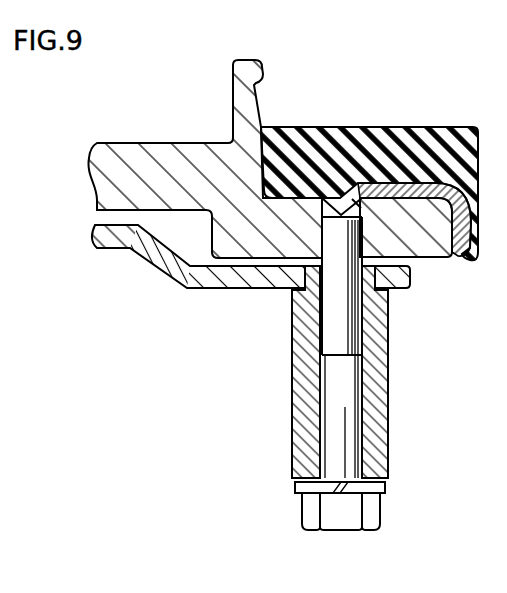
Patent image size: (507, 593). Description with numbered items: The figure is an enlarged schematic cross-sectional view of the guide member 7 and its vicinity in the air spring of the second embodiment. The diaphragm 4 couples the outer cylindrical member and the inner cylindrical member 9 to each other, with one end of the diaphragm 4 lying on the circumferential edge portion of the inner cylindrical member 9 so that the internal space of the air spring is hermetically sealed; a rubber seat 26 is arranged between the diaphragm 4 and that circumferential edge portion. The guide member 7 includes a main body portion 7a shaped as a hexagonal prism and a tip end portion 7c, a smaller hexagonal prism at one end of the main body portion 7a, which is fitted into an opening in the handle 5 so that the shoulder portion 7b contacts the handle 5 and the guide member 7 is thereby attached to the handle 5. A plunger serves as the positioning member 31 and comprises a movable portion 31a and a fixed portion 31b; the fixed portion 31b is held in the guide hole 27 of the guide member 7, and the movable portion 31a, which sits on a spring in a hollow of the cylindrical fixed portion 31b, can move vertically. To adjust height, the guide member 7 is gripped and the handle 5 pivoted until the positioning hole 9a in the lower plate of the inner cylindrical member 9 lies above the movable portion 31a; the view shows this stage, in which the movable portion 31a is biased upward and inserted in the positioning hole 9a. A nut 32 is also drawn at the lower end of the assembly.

The diaphragm 4 is at (429, 145).
The handle 5 is at (170, 268).
The guide member 7 is at (296, 372).
The main body portion 7a is at (298, 399).
The shoulder portion 7b is at (297, 292).
The tip end portion 7c is at (312, 294).
The inner cylindrical member 9 is at (430, 249).
The positioning hole 9a is at (325, 215).
The rubber seat 26 is at (466, 255).
The guide hole 27 is at (318, 427).
The positioning member 31 is at (401, 347).
The movable portion 31a is at (338, 325).
The fixed portion 31b is at (338, 400).
The nut 32 is at (367, 514).